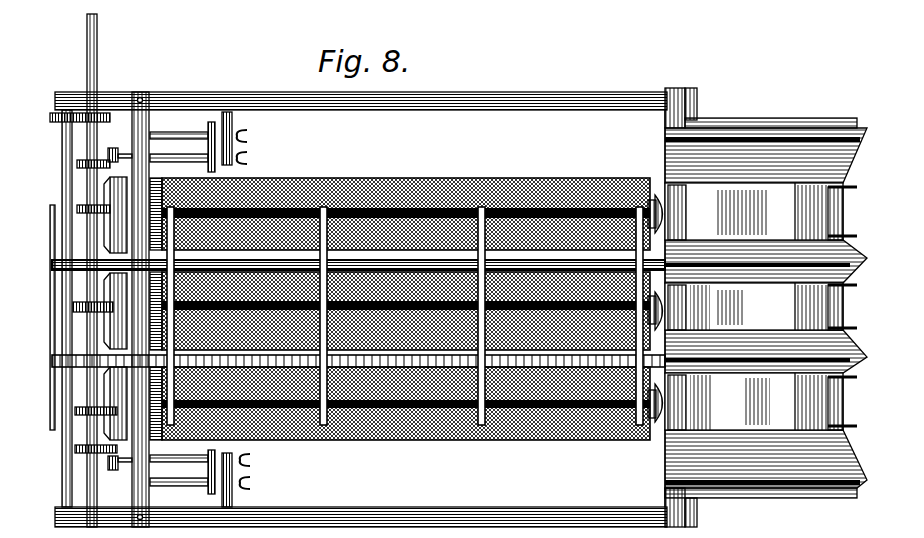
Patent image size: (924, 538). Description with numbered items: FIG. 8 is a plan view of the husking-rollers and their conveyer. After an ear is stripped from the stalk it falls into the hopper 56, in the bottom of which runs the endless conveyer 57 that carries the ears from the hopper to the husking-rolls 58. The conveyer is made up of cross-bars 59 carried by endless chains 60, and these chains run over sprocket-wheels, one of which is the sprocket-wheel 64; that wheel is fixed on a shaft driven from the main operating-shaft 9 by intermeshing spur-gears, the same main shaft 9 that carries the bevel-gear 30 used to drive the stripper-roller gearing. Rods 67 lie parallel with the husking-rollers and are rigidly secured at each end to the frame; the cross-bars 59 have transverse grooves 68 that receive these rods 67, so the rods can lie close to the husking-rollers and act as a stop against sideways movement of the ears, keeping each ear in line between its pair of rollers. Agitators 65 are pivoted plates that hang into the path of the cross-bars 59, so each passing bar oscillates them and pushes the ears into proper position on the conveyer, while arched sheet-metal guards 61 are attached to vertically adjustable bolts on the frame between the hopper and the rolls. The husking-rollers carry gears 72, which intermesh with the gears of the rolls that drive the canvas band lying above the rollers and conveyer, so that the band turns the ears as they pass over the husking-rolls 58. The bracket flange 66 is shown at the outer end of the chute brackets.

The main operating-shaft 9 is at (97, 50).
The bevel-gear 30 is at (108, 154).
The sprocket-wheel 64 is at (62, 413).
The gears of the husking-rollers 72 is at (138, 162).
The cross-bars 59 is at (343, 179).
The husking-rolls 58 is at (410, 438).
The transverse grooves 68 is at (485, 426).
The rods 67 is at (663, 208).
The guards 61 is at (667, 311).
The endless chains 60 is at (675, 283).
The hopper 56 is at (766, 308).
The endless conveyer 57 is at (787, 200).
The agitators 65 is at (824, 308).
The bracket flange 66 is at (850, 390).